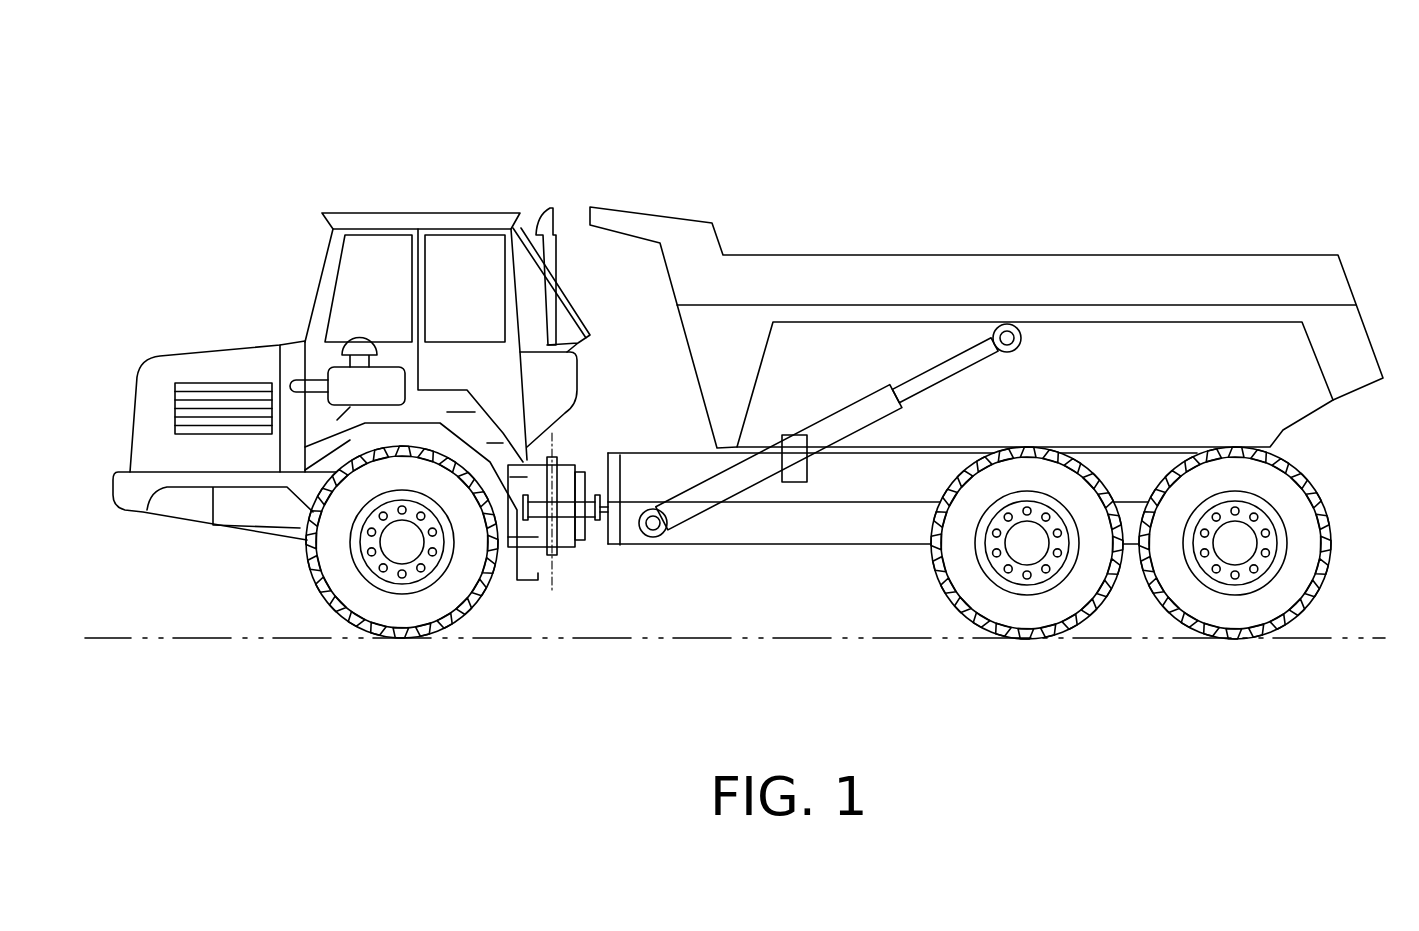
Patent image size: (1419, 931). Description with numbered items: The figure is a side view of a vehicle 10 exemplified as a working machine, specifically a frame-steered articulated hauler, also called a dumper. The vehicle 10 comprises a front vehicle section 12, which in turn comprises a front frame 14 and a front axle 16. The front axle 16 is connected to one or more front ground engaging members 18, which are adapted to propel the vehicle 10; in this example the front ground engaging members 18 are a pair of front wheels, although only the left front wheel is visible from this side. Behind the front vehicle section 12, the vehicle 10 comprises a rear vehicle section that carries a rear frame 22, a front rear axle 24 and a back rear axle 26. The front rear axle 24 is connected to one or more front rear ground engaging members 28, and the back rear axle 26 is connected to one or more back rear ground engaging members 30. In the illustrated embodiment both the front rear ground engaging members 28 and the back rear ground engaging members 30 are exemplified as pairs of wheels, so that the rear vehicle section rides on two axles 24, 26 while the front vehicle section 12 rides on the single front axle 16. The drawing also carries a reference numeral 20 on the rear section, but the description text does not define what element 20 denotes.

The vehicle 10 is at (1020, 150).
The front vehicle section 12 is at (475, 170).
The front frame 14 is at (557, 557).
The front axle 16 is at (403, 542).
The front ground engaging members 18 is at (433, 600).
The dump body 20 is at (1170, 212).
The rear frame 22 is at (807, 520).
The front rear axle 24 is at (1027, 542).
The back rear axle 26 is at (1235, 542).
The front rear ground engaging members 28 is at (1058, 600).
The back rear ground engaging members 30 is at (1266, 600).